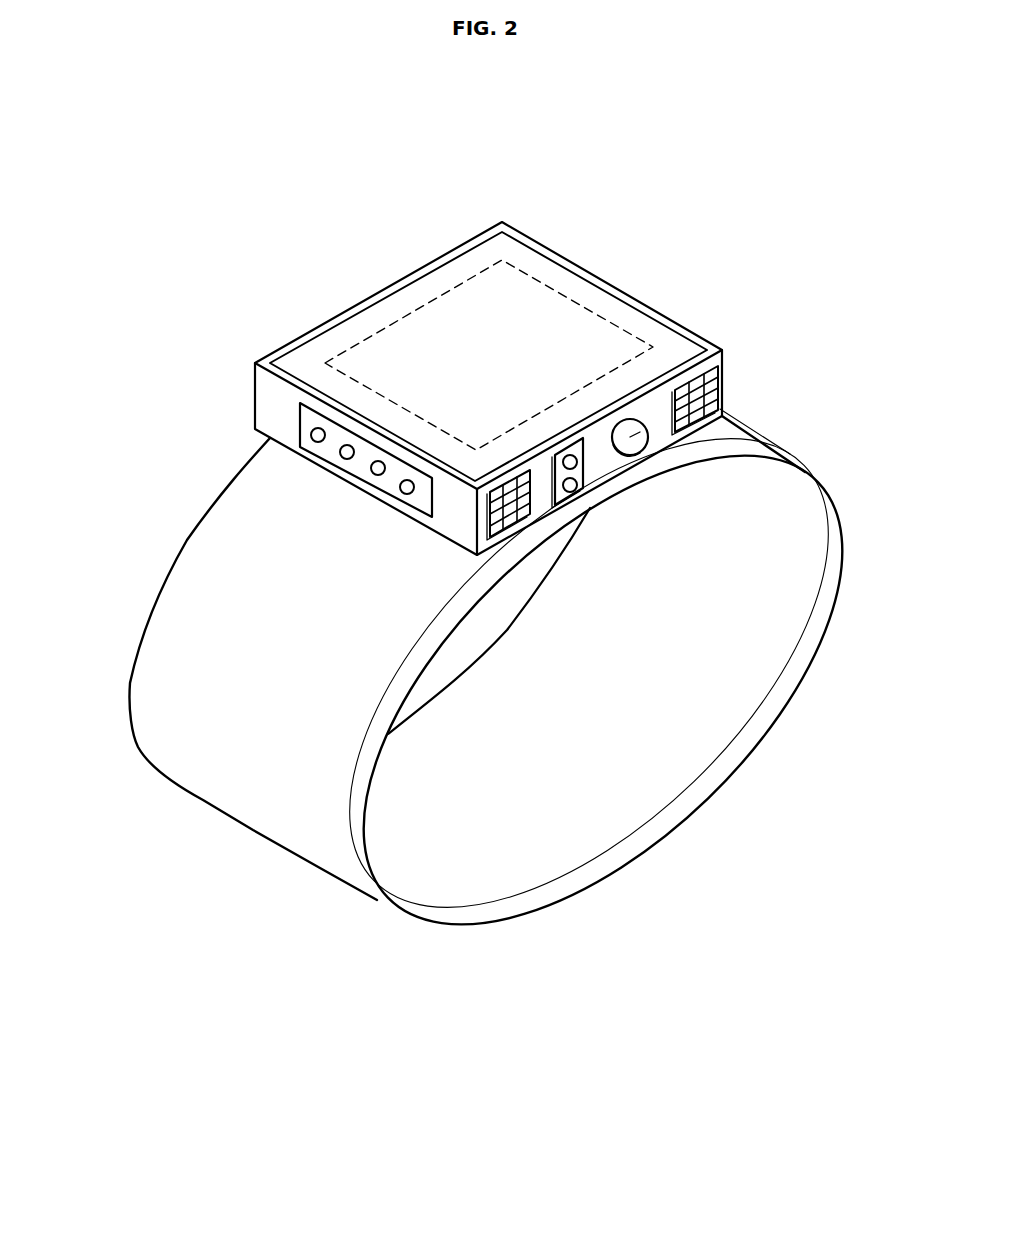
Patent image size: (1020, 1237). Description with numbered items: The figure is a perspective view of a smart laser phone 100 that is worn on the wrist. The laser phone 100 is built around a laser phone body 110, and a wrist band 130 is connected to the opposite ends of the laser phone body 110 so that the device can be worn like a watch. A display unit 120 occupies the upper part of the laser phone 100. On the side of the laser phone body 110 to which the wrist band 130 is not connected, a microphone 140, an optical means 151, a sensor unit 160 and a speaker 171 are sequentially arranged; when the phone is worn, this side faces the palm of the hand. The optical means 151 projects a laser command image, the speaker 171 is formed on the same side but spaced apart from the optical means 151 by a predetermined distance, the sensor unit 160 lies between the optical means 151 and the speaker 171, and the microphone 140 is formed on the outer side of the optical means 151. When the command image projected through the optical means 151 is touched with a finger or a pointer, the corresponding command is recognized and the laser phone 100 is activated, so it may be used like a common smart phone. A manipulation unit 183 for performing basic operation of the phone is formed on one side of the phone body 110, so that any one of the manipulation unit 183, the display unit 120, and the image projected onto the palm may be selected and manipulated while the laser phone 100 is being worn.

The laser phone 100 is at (461, 186).
The laser phone body 110 is at (348, 308).
The display unit 120 is at (442, 316).
The wrist band 130 is at (540, 912).
The microphone 140 is at (727, 394).
The optical means 151 is at (657, 433).
The sensor unit 160 is at (585, 464).
The speaker 171 is at (552, 497).
The manipulation unit 183 is at (303, 433).